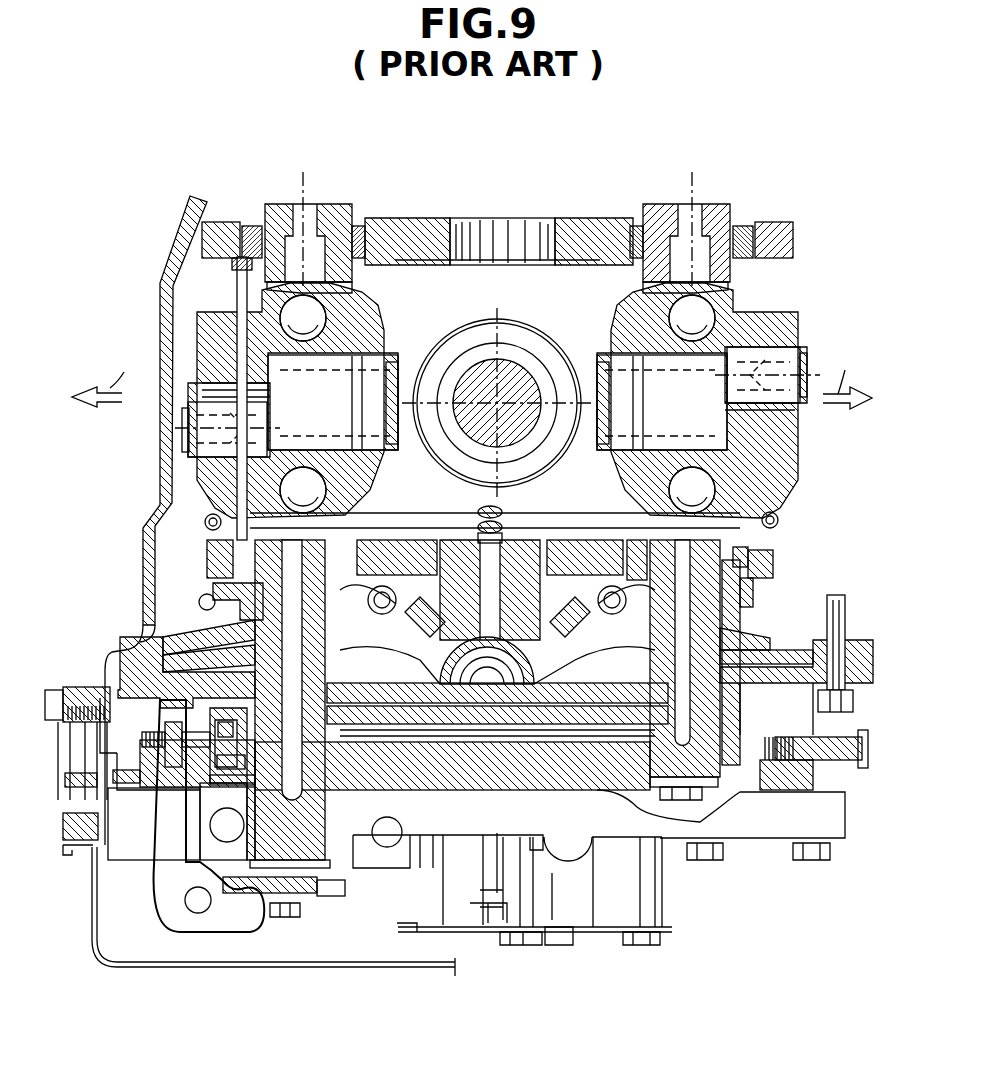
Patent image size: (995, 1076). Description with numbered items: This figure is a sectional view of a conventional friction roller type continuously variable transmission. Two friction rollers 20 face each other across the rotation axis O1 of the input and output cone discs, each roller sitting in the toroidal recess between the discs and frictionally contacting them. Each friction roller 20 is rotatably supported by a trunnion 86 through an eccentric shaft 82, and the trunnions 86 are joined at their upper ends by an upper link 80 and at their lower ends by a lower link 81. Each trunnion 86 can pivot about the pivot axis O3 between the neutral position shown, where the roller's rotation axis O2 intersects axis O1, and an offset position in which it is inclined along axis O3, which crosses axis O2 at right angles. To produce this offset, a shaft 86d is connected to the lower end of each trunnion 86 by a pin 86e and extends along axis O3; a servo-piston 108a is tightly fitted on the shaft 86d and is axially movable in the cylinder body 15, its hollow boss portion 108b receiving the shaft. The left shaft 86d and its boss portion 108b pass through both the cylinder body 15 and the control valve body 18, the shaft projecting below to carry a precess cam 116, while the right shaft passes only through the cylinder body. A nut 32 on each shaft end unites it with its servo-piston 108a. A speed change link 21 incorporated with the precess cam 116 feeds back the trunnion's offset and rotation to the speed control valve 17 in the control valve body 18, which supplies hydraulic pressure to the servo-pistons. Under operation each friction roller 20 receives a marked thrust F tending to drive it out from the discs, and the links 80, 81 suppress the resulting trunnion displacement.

The cylinder body 15 is at (147, 680).
The speed control valve 17 is at (600, 790).
The control valve body 18 is at (843, 773).
The friction roller 20 is at (367, 322).
The speed change link 21 is at (218, 932).
The nut 32 is at (287, 913).
The upper link 80 is at (226, 232).
The lower link 81 is at (220, 552).
The eccentric shaft 82 is at (387, 443).
The trunnion 86 is at (208, 333).
The shaft 86d is at (245, 615).
The pin 86e is at (232, 488).
The servo-piston 108a is at (130, 634).
The hollow boss portion 108b is at (258, 637).
The precess cam 116 is at (342, 903).
The rotation axis O1 is at (490, 397).
The rotation axis of the friction roller O2 is at (392, 362).
The pivot axis O3 is at (306, 190).
The thrust F is at (472, 377).